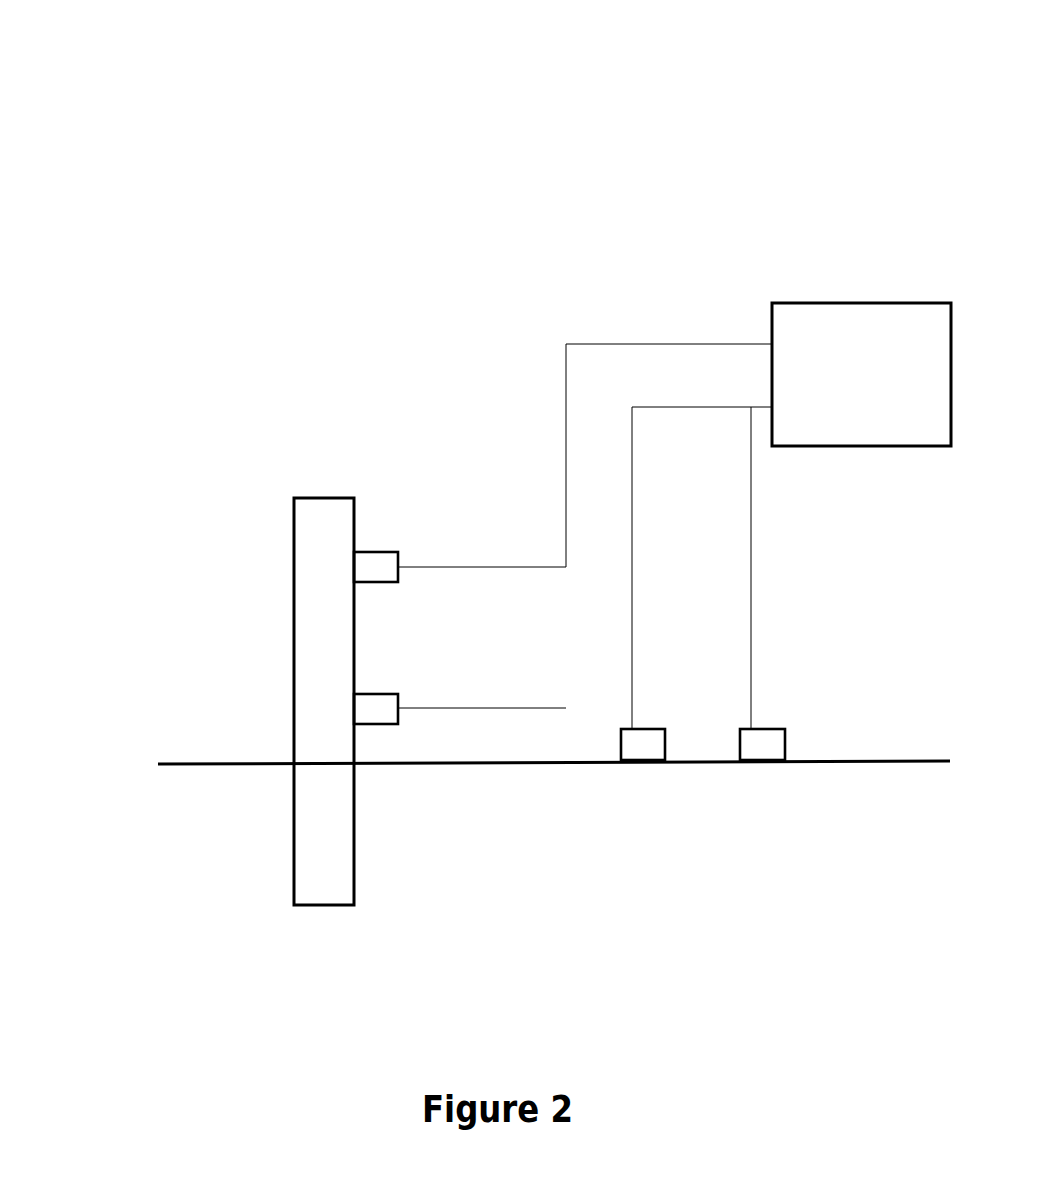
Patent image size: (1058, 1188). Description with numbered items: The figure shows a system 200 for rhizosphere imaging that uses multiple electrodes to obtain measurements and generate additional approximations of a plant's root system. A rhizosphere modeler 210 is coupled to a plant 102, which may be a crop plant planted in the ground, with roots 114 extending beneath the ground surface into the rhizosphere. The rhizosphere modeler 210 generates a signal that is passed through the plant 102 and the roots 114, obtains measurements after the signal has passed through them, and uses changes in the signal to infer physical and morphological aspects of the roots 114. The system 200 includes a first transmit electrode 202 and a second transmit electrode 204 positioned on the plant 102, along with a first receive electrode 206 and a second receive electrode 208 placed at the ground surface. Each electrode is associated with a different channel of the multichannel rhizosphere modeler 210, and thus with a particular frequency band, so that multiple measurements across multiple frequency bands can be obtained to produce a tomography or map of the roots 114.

The system 200 is at (806, 72).
The plant 102 is at (340, 498).
The roots 114 is at (354, 846).
The first transmit electrode 202 is at (372, 548).
The second transmit electrode 204 is at (372, 693).
The first receive electrode 206 is at (762, 729).
The second receive electrode 208 is at (648, 762).
The rhizosphere modeler 210 is at (861, 374).